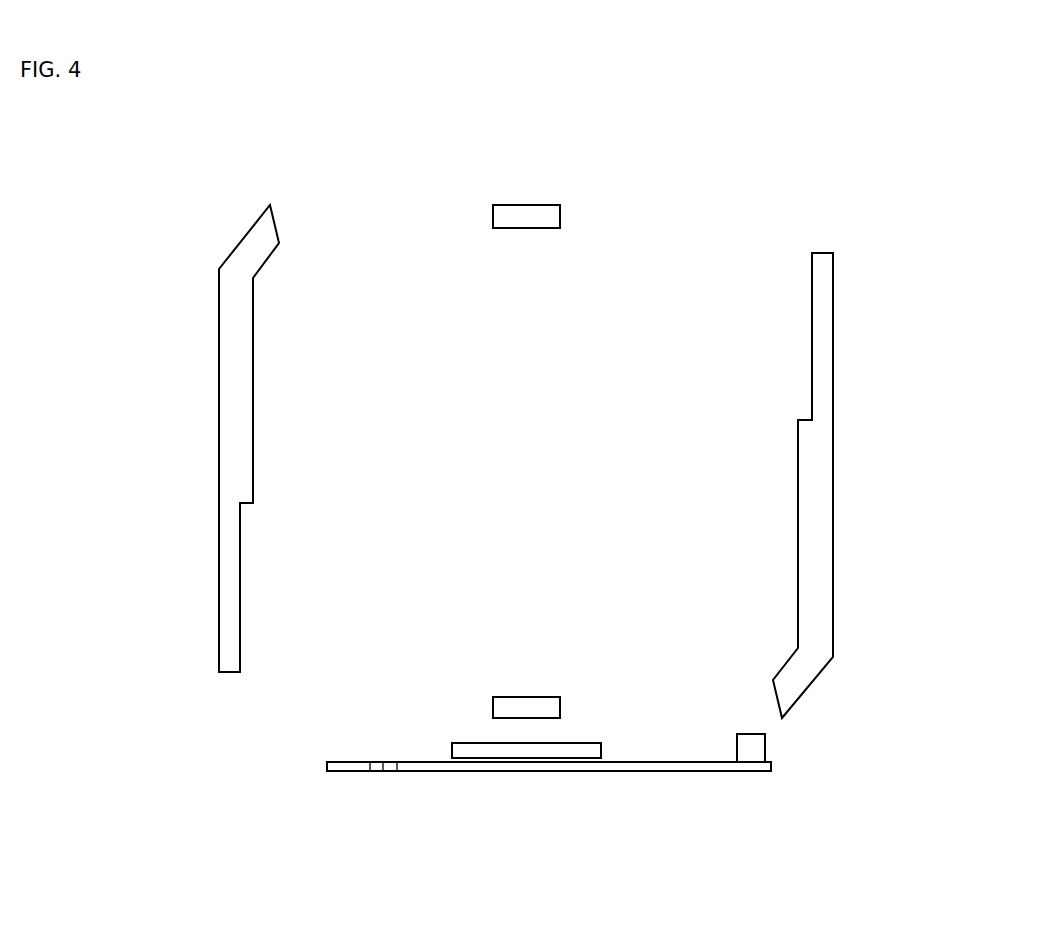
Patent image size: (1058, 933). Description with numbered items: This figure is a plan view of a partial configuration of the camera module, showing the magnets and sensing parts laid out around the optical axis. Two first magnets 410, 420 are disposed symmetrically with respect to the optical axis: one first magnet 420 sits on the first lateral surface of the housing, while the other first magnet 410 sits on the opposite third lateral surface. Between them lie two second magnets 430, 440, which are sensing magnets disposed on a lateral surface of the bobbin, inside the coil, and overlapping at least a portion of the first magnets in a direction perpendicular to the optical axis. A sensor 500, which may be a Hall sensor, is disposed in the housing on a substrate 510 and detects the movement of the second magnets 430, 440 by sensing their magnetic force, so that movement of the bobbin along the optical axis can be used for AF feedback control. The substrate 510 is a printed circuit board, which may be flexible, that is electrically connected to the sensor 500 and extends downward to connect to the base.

The first magnet 410 is at (833, 343).
The first magnet 420 is at (228, 382).
The second magnet 430 is at (544, 703).
The second magnet 440 is at (527, 205).
The sensor 500 is at (457, 745).
The substrate 510 is at (397, 770).